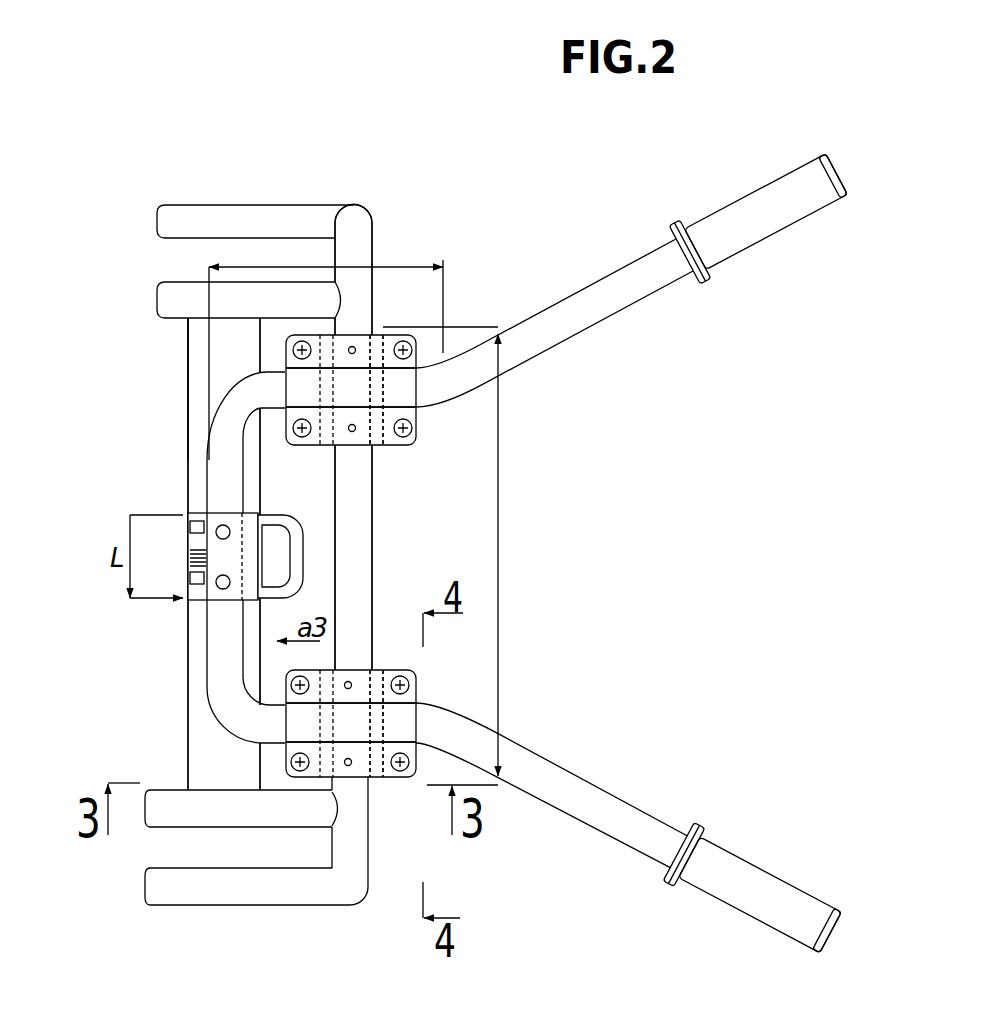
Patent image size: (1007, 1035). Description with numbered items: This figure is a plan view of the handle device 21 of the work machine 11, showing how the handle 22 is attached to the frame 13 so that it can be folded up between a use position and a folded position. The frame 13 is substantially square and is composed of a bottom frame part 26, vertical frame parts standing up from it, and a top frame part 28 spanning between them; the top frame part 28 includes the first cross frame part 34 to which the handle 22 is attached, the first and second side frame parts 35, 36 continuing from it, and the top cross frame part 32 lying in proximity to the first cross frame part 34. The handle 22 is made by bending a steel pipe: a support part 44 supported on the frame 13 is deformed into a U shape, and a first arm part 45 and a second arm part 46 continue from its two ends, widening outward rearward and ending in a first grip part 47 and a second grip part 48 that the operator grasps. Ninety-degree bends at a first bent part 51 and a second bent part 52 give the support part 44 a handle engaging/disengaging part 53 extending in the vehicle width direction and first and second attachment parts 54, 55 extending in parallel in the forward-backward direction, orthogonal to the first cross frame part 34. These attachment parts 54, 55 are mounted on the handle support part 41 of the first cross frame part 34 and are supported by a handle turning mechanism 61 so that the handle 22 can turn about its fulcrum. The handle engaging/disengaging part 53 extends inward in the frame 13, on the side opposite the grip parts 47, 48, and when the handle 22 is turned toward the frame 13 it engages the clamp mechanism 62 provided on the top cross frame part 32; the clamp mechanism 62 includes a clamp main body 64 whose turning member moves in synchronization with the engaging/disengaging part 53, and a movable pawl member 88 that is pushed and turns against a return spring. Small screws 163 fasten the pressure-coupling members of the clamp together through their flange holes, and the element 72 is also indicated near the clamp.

The work machine 11 is at (175, 133).
The frame 13 is at (287, 170).
The handle device 21 is at (441, 210).
The handle 22 is at (558, 305).
The bottom frame part 26 is at (215, 205).
The top frame part 28 is at (383, 255).
The first cross frame part 34 is at (353, 438).
The top cross frame part 32 is at (185, 352).
The first side frame part 35 is at (178, 827).
The second side frame part 36 is at (185, 280).
The handle support part 41 is at (500, 492).
The support part 44 is at (408, 265).
The first arm part 45 is at (585, 823).
The second arm part 46 is at (612, 272).
The first grip part 47 is at (757, 919).
The second grip part 48 is at (740, 198).
The first bent part 51 is at (222, 717).
The second bent part 52 is at (233, 388).
The handle engaging/disengaging part 53 is at (207, 457).
The first attachment part 54 is at (358, 747).
The second attachment part 55 is at (360, 407).
The handle turning mechanism 61 is at (432, 421).
The clamp mechanism 62 is at (176, 494).
The clamp main body 64 is at (228, 604).
The operating handle 72 is at (307, 545).
The movable pawl member 88 is at (303, 568).
The small screws 163 is at (437, 432).